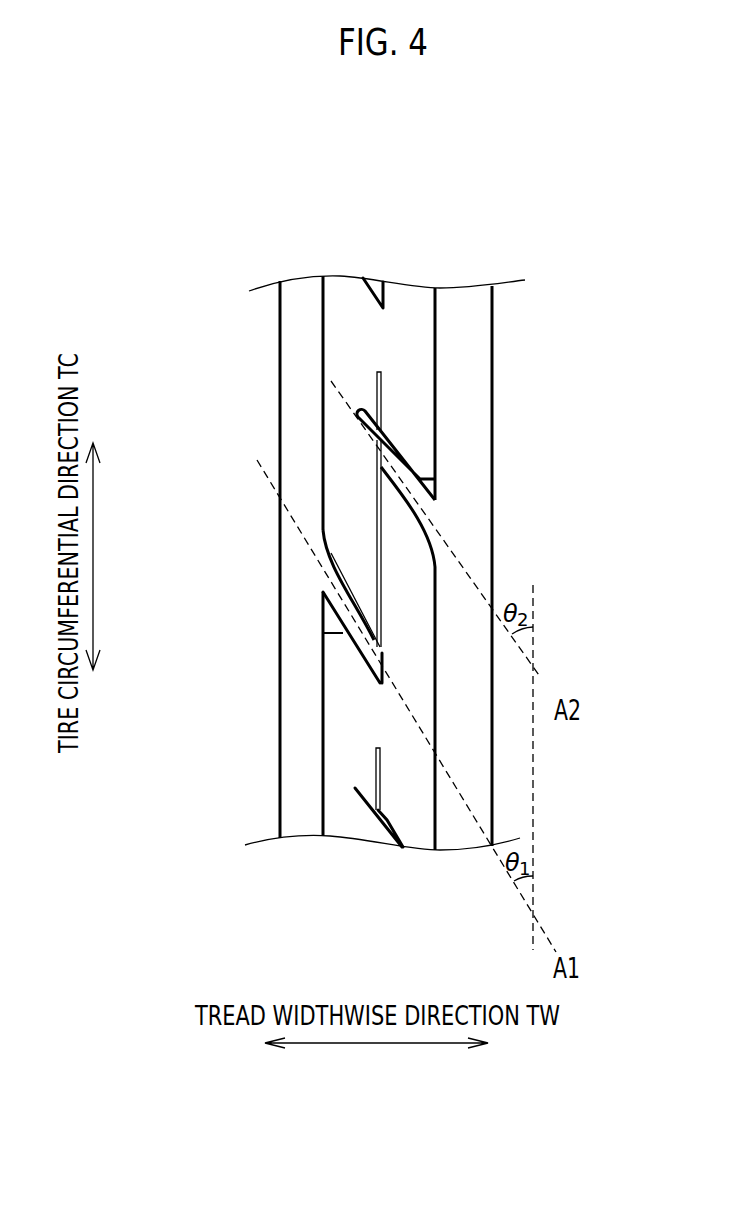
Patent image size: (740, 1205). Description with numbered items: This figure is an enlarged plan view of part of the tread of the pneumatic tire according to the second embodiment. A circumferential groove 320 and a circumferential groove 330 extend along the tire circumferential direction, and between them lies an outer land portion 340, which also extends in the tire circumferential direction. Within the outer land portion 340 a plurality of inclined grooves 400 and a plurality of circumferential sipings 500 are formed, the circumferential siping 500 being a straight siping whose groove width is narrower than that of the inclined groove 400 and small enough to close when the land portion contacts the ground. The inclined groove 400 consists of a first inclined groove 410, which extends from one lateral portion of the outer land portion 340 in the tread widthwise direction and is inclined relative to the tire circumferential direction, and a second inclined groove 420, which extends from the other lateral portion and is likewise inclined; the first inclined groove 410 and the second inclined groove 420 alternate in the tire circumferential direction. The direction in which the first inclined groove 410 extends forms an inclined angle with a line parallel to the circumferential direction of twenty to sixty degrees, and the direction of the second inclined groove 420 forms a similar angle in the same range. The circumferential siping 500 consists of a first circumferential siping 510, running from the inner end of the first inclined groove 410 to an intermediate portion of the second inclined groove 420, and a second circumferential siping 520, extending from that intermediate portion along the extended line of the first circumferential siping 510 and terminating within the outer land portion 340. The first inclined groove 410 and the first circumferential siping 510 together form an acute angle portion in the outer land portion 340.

The circumferential groove 320 is at (463, 302).
The circumferential groove 330 is at (302, 288).
The outer land portion 340 is at (408, 300).
The inclined groove 400 is at (195, 525).
The first inclined groove 410 is at (355, 660).
The second inclined groove 420 is at (361, 453).
The circumferential siping 500 is at (575, 420).
The first circumferential siping 510 is at (381, 548).
The second circumferential siping 520 is at (378, 408).